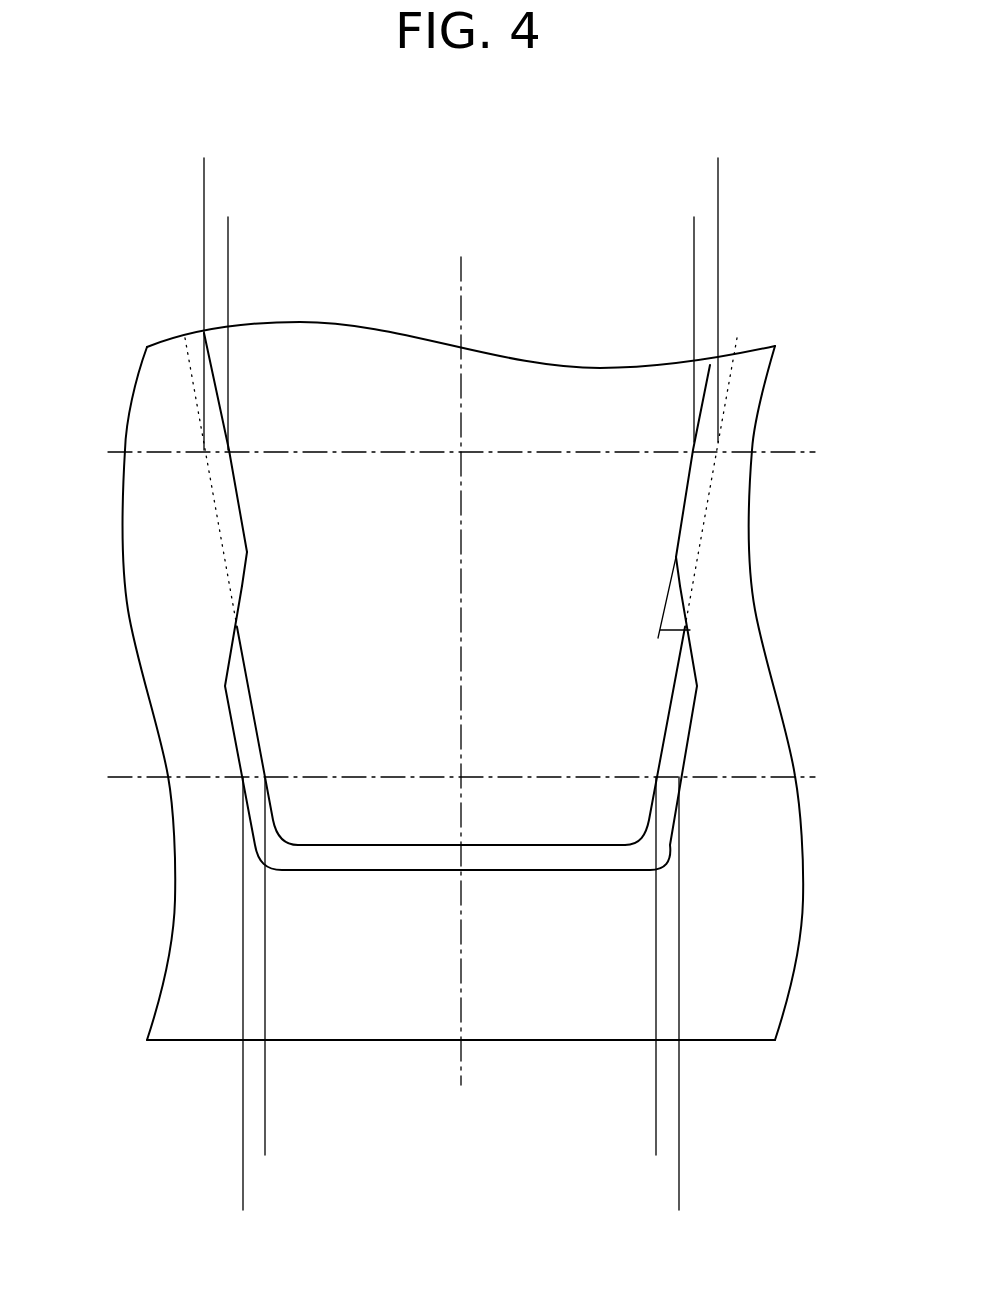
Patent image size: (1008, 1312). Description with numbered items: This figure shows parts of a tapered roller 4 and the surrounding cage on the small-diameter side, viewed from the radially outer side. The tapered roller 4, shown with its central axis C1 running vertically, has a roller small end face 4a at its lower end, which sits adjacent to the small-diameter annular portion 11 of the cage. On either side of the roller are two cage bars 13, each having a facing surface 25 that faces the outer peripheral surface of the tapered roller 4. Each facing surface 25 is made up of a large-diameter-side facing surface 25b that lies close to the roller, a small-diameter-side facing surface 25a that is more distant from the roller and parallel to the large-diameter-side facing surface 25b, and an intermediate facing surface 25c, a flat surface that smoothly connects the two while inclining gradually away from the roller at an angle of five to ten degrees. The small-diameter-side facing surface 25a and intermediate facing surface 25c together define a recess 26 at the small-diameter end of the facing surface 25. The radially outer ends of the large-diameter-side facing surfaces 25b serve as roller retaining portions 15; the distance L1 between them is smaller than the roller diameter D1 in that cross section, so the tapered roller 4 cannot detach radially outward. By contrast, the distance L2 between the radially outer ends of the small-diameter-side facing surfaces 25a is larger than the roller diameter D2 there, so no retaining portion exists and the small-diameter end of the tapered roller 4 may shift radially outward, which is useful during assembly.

The tapered roller 4 is at (313, 357).
The roller small end face 4a is at (517, 847).
The small-diameter annular portion 11 is at (338, 1013).
The cage bar 13 is at (183, 573).
The roller retaining portion 15 is at (228, 480).
The facing surface 25 is at (457, 601).
The small-diameter-side facing surface 25a is at (461, 728).
The large-diameter-side facing surface 25b is at (243, 515).
The intermediate facing surface 25c is at (245, 582).
The recess 26 is at (260, 728).
The central axis C1 is at (462, 300).
The diameter of the tapered roller D1 is at (692, 181).
The distance between roller retaining portions L1 is at (668, 241).
The diameter of the tapered roller D2 is at (630, 1129).
The distance between small-diameter-side facing surfaces L2 is at (653, 1184).